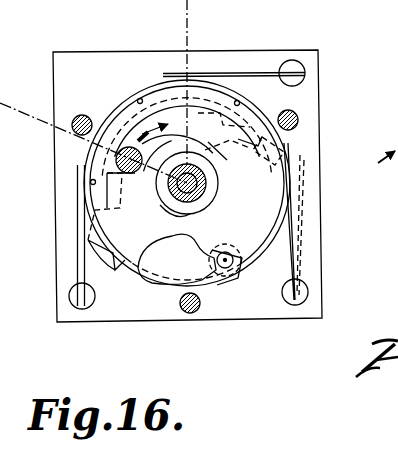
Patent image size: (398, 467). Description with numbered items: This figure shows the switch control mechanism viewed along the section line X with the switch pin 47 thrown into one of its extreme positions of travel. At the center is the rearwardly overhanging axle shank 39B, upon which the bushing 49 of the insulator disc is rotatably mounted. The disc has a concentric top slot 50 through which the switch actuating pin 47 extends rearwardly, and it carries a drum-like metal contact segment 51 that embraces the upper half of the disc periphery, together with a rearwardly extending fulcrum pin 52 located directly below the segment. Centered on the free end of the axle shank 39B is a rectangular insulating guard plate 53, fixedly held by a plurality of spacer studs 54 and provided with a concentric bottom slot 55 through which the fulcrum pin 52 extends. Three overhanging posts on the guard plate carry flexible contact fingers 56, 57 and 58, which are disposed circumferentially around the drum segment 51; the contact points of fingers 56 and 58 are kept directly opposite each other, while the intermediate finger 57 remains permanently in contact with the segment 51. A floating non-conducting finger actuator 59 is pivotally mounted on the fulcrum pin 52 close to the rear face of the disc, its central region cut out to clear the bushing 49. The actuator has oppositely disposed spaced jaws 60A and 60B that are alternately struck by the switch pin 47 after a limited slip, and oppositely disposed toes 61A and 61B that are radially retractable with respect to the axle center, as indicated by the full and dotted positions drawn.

The section line X is at (34, 109).
The axle shank 39B is at (310, 150).
The switch pin 47 is at (127, 148).
The bushing 49 is at (183, 203).
The top slot 50 is at (188, 163).
The contact segment 51 is at (263, 103).
The fulcrum pin 52 is at (227, 270).
The guard plate 53 is at (108, 312).
The spacer stud 54 is at (82, 118).
The bottom slot 55 is at (172, 275).
The contact finger 56 is at (78, 220).
The contact finger 57 is at (252, 72).
The contact finger 58 is at (295, 238).
The finger actuator 59 is at (274, 195).
The jaw 60A is at (132, 172).
The jaw 60B is at (202, 121).
The toe 61A is at (102, 247).
The toe 61B is at (195, 180).